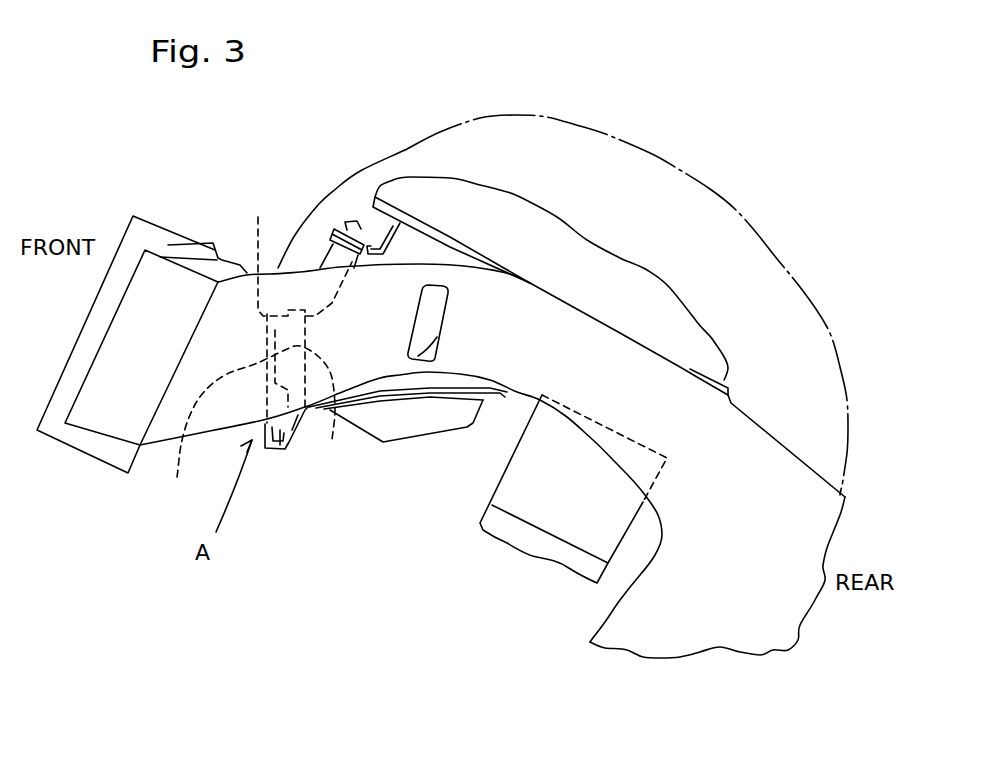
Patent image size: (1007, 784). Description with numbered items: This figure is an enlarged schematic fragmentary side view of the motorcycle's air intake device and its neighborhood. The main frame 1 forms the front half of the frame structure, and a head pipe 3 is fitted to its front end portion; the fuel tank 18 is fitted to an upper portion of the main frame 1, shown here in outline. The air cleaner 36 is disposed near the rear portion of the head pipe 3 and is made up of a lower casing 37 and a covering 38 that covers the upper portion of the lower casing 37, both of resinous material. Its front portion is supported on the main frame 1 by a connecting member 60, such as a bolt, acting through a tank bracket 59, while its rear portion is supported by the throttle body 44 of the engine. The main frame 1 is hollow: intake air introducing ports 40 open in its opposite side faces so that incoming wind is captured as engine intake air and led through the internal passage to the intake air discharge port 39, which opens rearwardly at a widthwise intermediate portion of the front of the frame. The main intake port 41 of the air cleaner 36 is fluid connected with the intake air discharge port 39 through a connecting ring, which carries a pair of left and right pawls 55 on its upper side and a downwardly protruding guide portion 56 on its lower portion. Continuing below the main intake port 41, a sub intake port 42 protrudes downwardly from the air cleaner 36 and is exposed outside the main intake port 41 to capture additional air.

The main frame 1 is at (715, 585).
The head pipe 3 is at (141, 232).
The fuel tank 18 is at (614, 137).
The air cleaner 36 is at (653, 263).
The lower casing 37 is at (410, 250).
The covering 38 is at (458, 192).
The intake air discharge port 39 is at (332, 440).
The intake air introducing ports 40 is at (421, 362).
The main intake port 41 is at (246, 427).
The sub intake port 42 is at (277, 430).
The throttle body 44 is at (573, 517).
The pawls 55 is at (297, 308).
The guide portion 56 is at (286, 449).
The tank bracket 59 is at (367, 242).
The connecting member 60 is at (351, 218).